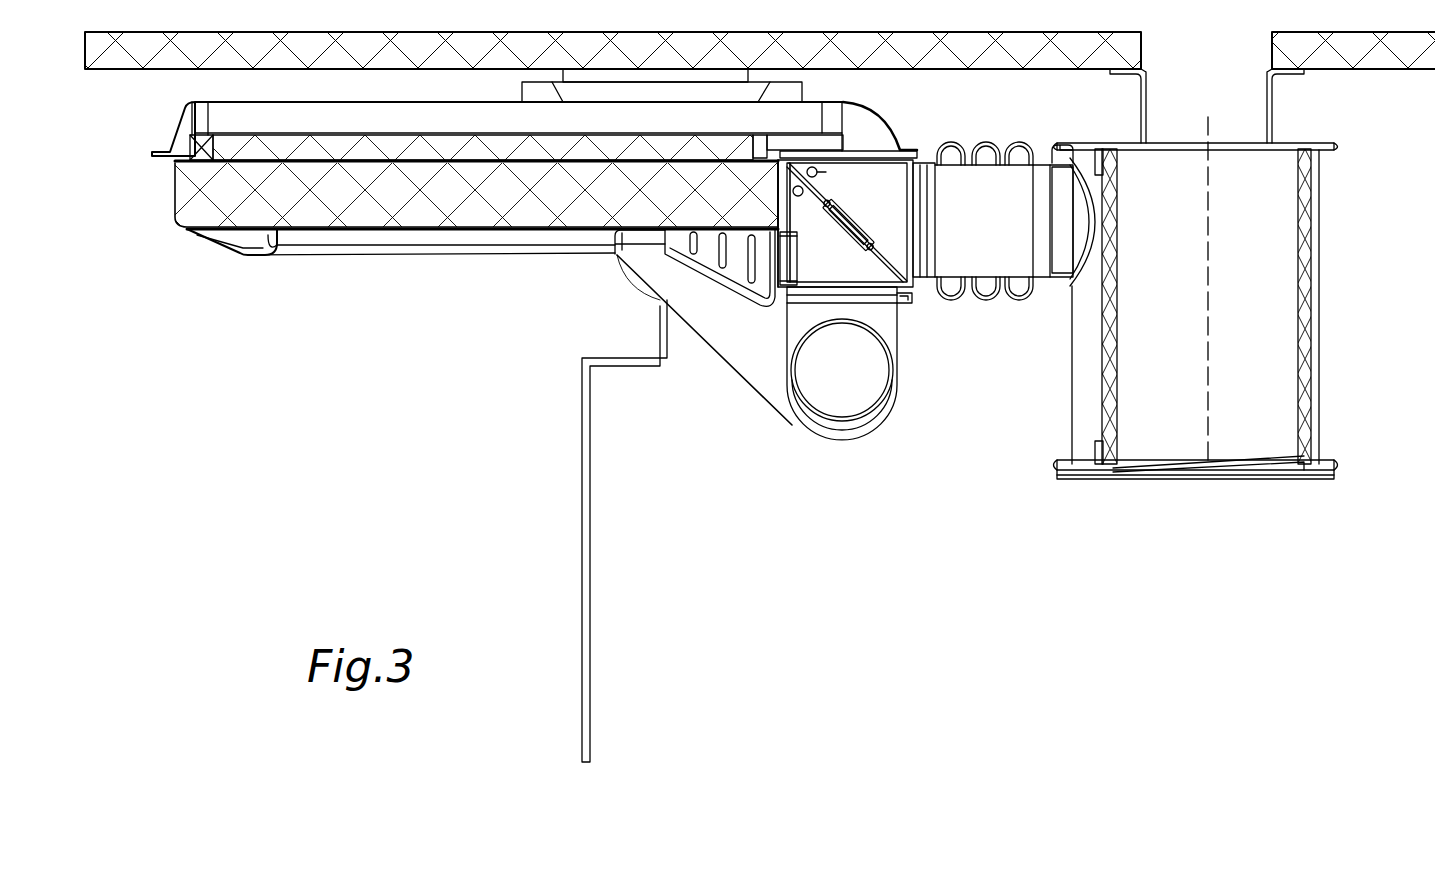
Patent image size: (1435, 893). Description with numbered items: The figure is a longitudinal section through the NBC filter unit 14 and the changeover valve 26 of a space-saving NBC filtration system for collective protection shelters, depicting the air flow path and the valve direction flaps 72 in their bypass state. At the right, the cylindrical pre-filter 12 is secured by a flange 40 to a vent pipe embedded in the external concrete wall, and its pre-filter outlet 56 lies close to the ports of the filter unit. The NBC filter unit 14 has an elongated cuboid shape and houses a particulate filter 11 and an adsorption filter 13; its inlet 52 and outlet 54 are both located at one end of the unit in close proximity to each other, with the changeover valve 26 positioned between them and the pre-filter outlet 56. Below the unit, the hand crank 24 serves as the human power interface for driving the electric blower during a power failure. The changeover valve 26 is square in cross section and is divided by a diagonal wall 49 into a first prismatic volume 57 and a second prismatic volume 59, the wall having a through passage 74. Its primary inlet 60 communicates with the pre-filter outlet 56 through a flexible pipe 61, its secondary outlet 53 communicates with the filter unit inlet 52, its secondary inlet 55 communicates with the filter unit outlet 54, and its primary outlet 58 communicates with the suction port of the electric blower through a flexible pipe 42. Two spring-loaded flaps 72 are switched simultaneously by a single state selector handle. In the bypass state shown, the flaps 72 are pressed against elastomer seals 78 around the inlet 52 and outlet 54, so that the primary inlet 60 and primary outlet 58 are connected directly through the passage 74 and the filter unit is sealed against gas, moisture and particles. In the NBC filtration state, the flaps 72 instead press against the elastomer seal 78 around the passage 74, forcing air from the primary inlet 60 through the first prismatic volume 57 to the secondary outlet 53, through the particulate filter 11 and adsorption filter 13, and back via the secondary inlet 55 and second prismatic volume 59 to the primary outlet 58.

The particulate filter 11 is at (232, 150).
The pre-filter 12 is at (1322, 306).
The adsorption filter 13 is at (177, 224).
The NBC filter unit 14 is at (443, 254).
The hand crank 24 is at (592, 562).
The changeover valve 26 is at (922, 152).
The flange 40 is at (1290, 74).
The flexible pipe 42 is at (855, 438).
The diagonal wall 49 is at (913, 283).
The inlet 52 is at (870, 157).
The secondary outlet 53 is at (890, 143).
The outlet 54 is at (770, 258).
The secondary inlet 55 is at (813, 245).
The pre-filter outlet 56 is at (1050, 160).
The first prismatic volume 57 is at (862, 228).
The primary outlet 58 is at (857, 317).
The second prismatic volume 59 is at (830, 262).
The primary inlet 60 is at (920, 257).
The flexible pipe 61 is at (1020, 290).
The flaps 72 is at (862, 150).
The passage 74 is at (844, 214).
The elastomer seals 78 is at (805, 215).